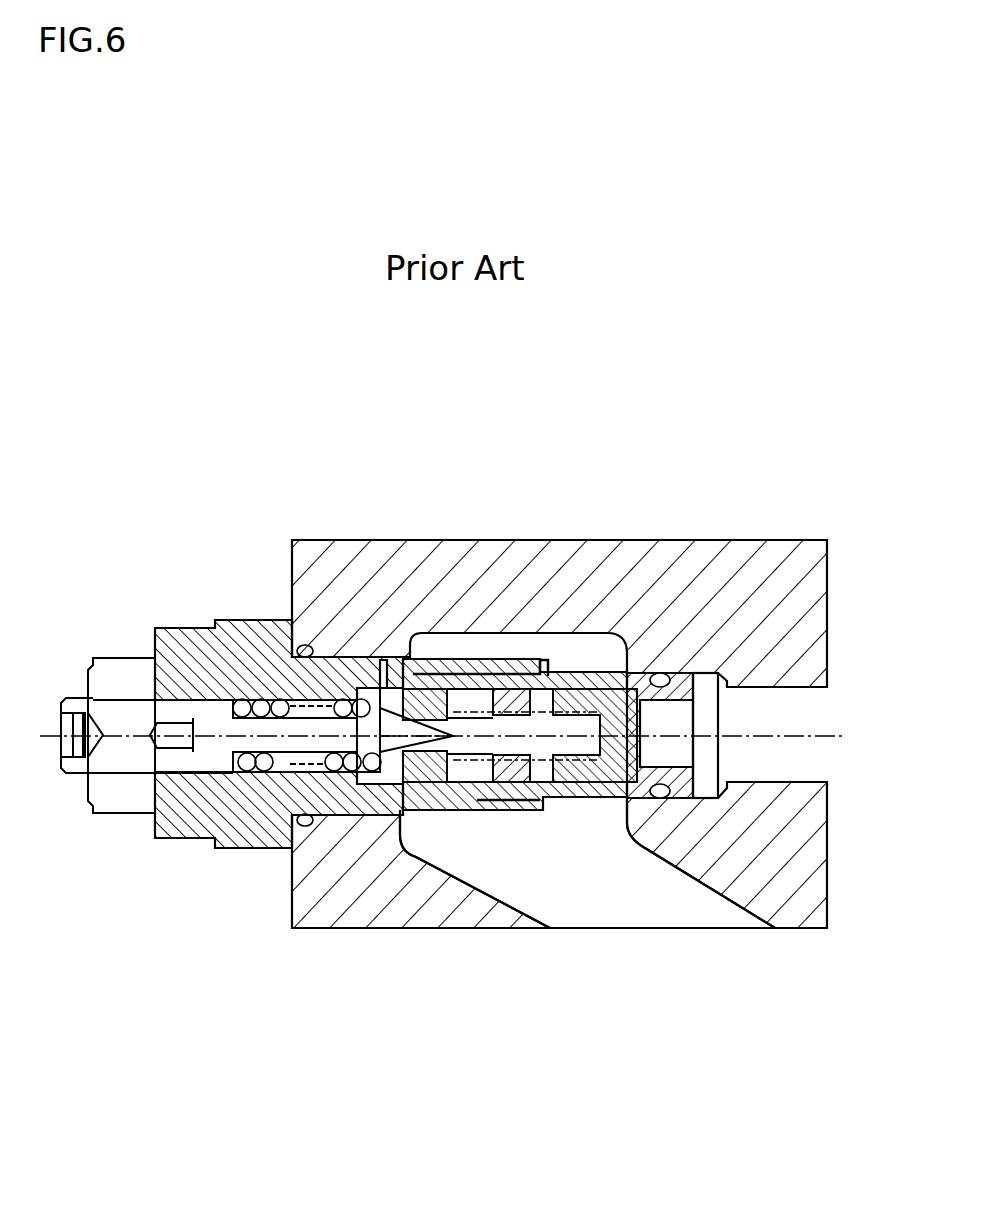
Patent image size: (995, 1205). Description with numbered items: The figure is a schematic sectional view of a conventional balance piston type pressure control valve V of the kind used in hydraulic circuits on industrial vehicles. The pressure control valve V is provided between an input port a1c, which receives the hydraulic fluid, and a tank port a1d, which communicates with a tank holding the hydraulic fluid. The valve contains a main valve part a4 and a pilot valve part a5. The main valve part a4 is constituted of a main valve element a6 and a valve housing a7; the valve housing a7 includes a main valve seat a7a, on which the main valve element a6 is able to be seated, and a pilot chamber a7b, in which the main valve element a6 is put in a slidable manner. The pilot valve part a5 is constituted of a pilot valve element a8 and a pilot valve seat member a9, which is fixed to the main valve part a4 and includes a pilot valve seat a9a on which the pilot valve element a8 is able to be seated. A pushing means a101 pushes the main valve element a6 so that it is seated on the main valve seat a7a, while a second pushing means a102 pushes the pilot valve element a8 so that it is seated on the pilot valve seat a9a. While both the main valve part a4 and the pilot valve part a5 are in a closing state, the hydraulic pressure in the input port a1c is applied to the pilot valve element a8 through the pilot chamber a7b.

The input port a1c is at (772, 704).
The tank port a1d is at (636, 887).
The pushing means a102 is at (253, 848).
The pressure control valve V is at (222, 860).
The pilot valve part a5 is at (393, 707).
The valve housing a7 is at (440, 810).
The main valve seat a7a is at (577, 797).
The pilot chamber a7b is at (486, 768).
The pushing means a101 is at (524, 668).
The pilot valve seat member a9 is at (412, 689).
The pilot valve seat a9a is at (380, 778).
The pilot valve element a8 is at (438, 666).
The main valve part a4 is at (556, 798).
The main valve element a6 is at (568, 672).